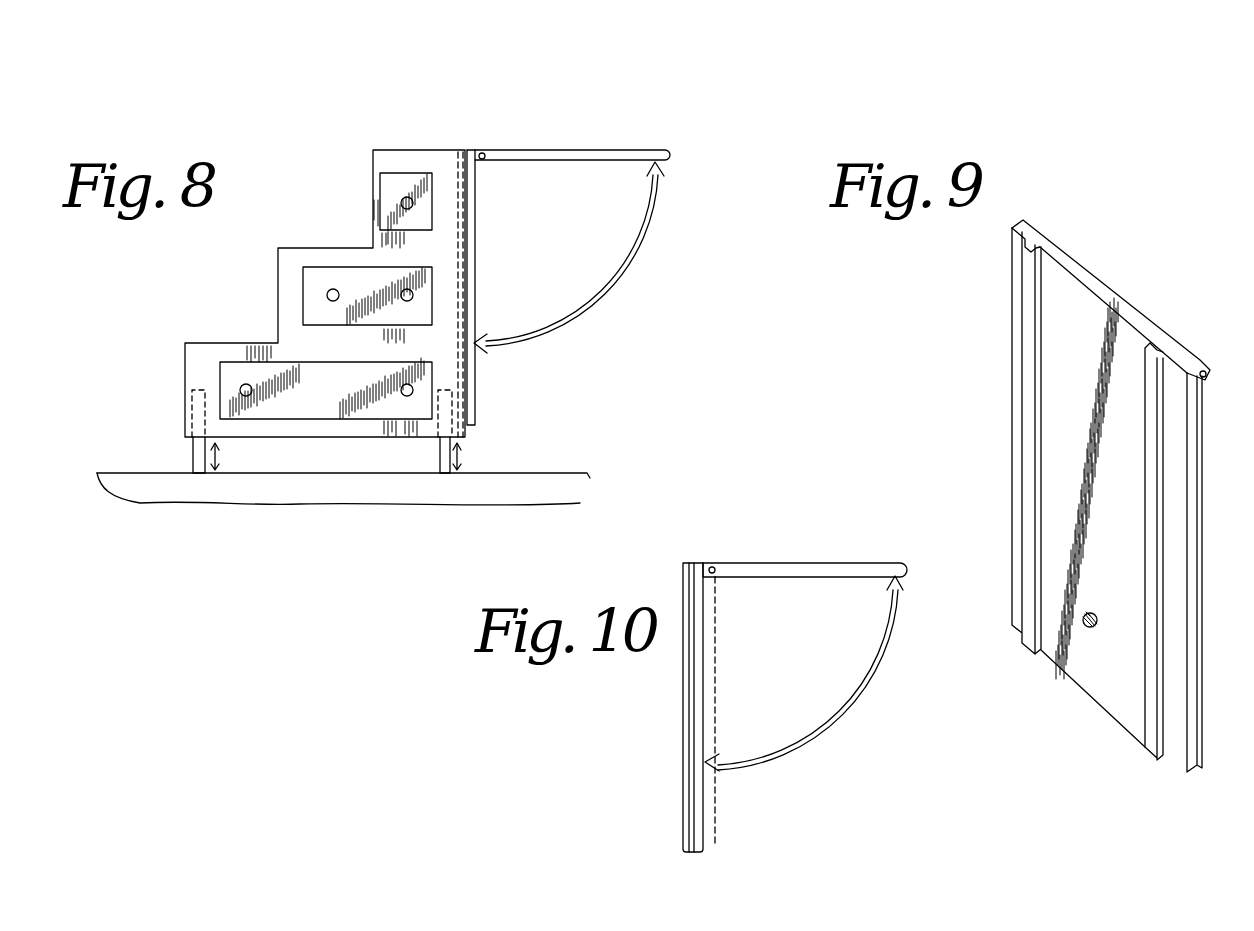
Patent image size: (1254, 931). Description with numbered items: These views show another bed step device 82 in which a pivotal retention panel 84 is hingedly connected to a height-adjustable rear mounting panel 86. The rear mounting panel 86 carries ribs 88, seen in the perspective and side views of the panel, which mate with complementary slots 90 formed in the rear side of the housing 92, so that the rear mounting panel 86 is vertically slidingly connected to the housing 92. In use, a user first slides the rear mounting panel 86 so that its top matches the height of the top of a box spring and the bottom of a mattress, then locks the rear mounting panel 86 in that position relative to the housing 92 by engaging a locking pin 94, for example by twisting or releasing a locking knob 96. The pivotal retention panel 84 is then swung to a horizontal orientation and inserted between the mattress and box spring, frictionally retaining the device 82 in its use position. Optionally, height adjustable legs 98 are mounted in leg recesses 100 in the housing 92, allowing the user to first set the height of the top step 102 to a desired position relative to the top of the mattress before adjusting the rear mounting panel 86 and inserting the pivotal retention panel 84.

In FIG. 8, the bed step device 82 is at (360, 201).
In FIG. 8, the pivotal retention panel 84 is at (517, 150).
In FIG. 9, the pivotal retention panel 84 is at (1052, 242).
In FIG. 10, the pivotal retention panel 84 is at (810, 562).
In FIG. 8, the rear mounting panel 86 is at (476, 250).
In FIG. 9, the rear mounting panel 86 is at (1078, 392).
In FIG. 10, the rear mounting panel 86 is at (701, 562).
In FIG. 9, the ribs 88 is at (1030, 300).
In FIG. 10, the ribs 88 is at (692, 560).
In FIG. 8, the slots 90 is at (458, 148).
In FIG. 8, the housing 92 is at (452, 167).
In FIG. 9, the locking pin 94 is at (1088, 628).
In FIG. 8, the locking knob 96 is at (480, 398).
In FIG. 10, the locking knob 96 is at (804, 673).
In FIG. 8, the height adjustable legs 98 is at (198, 455).
In FIG. 8, the leg recesses 100 is at (192, 395).
In FIG. 8, the top step 102 is at (458, 150).